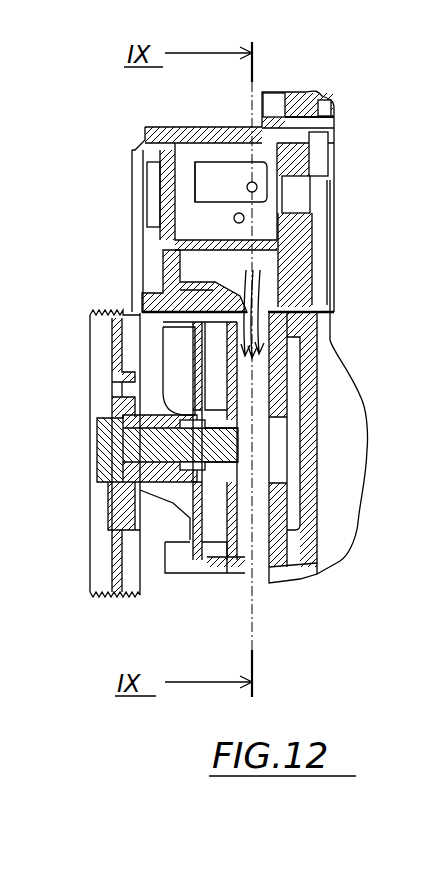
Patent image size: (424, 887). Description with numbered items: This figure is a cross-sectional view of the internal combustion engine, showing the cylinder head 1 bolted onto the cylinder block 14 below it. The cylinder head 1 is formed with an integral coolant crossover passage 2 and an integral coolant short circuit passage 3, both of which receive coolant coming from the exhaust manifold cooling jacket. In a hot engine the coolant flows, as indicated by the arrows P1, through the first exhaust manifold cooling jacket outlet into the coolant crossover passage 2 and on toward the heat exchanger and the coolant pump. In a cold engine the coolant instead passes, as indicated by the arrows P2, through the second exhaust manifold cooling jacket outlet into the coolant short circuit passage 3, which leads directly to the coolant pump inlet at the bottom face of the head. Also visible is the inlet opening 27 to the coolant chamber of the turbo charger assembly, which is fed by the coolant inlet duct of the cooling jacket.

The cylinder head 1 is at (318, 299).
The coolant crossover passage 2 is at (225, 172).
The coolant short circuit passage 3 is at (274, 270).
The cylinder block 14 is at (300, 557).
The inlet opening 27 is at (217, 527).
The arrows P1 is at (247, 187).
The arrows P2 is at (247, 303).